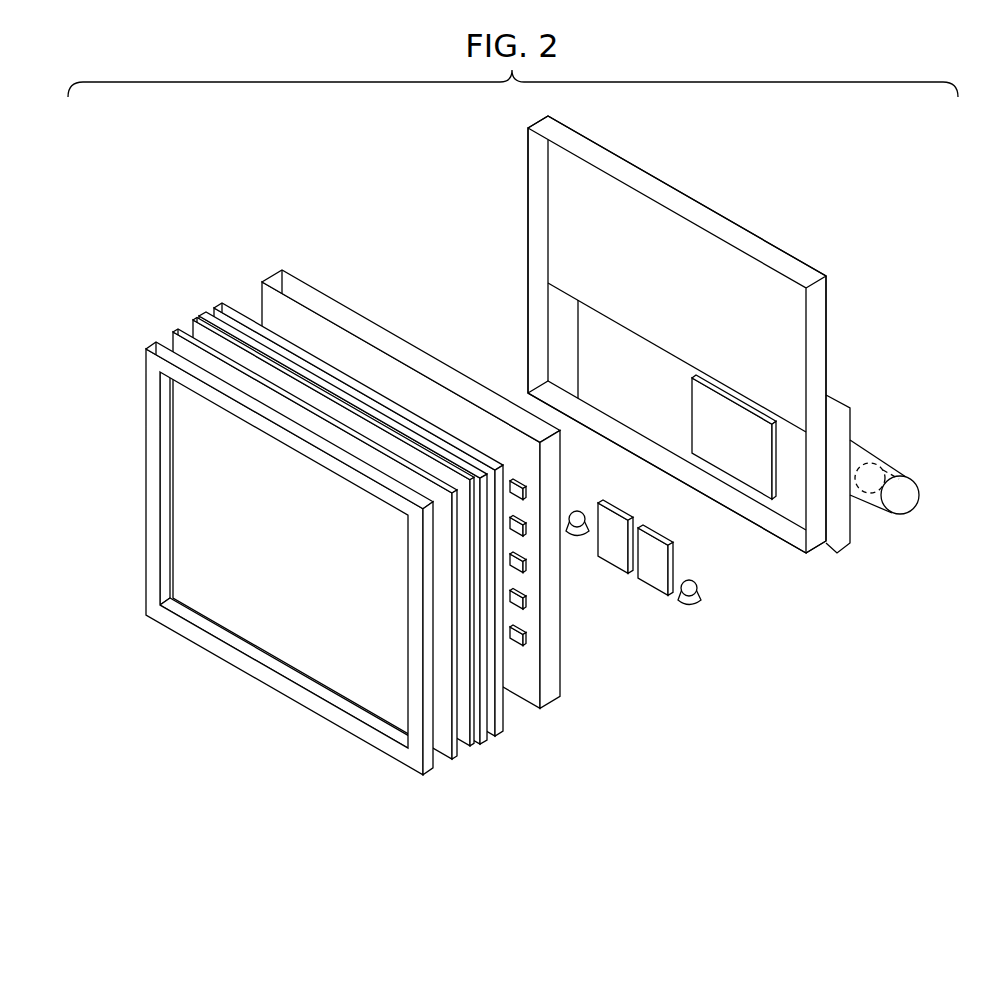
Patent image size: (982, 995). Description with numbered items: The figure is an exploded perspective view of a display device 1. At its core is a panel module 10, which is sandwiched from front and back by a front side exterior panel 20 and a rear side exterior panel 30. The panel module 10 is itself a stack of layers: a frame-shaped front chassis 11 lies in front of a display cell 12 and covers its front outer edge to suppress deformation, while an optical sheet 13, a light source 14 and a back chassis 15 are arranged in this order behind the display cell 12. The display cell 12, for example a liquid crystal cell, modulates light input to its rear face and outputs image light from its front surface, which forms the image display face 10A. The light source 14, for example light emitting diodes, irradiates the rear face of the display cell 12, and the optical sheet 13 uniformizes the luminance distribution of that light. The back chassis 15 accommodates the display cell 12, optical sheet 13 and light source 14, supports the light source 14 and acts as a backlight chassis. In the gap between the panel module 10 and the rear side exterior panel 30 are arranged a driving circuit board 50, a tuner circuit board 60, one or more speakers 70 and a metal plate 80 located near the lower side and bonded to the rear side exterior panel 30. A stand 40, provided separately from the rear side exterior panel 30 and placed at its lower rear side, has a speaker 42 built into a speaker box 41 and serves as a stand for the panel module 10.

The display device 1 is at (830, 158).
The panel module 10 is at (580, 712).
The image display face 10A is at (277, 570).
The front chassis 11 is at (175, 330).
The display cell 12 is at (198, 316).
The optical sheet 13 is at (221, 302).
The light source 14 is at (509, 480).
The back chassis 15 is at (295, 286).
The front side exterior panel 20 is at (312, 574).
The rear side exterior panel 30 is at (840, 538).
The stand 40 is at (900, 427).
The speaker box 41 is at (910, 483).
The speaker 42 is at (871, 476).
The driving circuit board 50 is at (610, 553).
The tuner circuit board 60 is at (652, 577).
The speaker 70 is at (577, 537).
The metal plate 80 is at (728, 428).